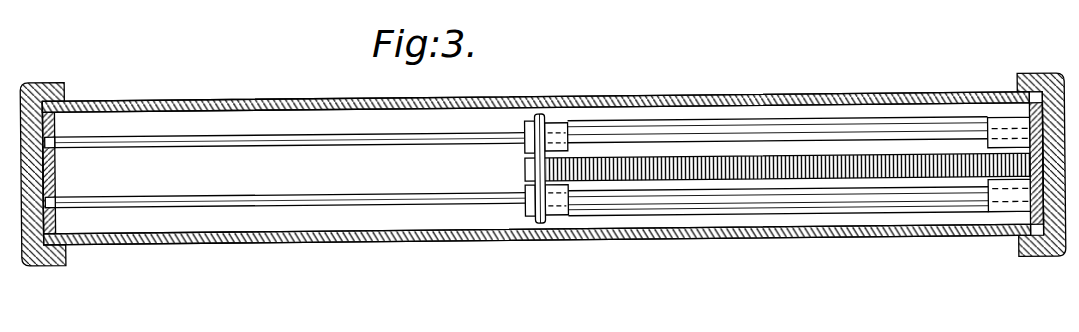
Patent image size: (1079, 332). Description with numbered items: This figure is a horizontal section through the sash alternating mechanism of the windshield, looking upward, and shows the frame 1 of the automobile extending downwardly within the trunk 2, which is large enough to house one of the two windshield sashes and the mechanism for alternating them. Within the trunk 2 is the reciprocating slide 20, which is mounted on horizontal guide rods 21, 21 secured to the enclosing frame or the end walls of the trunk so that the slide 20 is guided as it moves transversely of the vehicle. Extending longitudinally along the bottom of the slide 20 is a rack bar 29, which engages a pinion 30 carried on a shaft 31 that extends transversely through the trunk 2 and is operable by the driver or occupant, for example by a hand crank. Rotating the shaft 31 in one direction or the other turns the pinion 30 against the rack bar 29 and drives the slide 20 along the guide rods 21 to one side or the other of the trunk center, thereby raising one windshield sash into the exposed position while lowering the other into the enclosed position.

The frame 1 is at (62, 87).
The trunk 2 is at (293, 102).
The reciprocating slide 20 is at (724, 213).
The horizontal guide rods 21 is at (377, 145).
The rack bar 29 is at (660, 172).
The pinion 30 is at (524, 168).
The shaft 31 is at (546, 121).